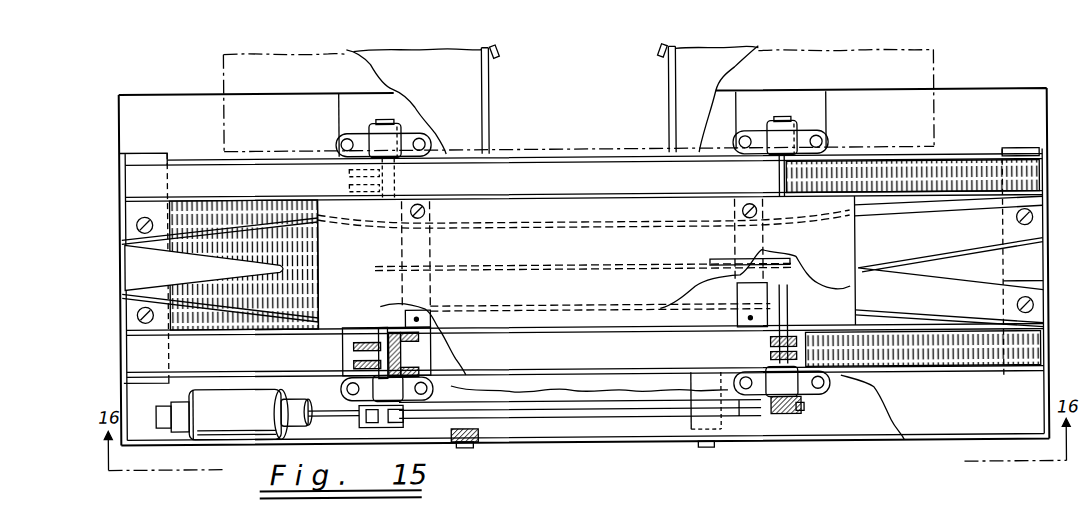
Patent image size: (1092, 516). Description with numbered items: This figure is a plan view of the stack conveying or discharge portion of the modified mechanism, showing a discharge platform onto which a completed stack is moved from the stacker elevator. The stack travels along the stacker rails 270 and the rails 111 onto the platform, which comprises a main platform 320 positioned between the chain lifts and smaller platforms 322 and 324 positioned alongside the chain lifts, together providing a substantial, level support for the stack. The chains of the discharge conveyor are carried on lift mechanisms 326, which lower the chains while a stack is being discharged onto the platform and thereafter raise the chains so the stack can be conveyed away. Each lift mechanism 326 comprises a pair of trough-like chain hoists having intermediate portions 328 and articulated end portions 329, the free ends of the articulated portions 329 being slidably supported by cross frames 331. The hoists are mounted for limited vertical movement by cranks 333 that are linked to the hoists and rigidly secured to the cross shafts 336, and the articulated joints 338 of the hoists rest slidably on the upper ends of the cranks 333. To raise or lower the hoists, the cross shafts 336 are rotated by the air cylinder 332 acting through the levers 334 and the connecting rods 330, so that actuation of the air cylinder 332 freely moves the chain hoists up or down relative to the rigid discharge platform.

The rails 270 is at (660, 50).
The rails 111 is at (490, 110).
The smaller platform 322 is at (225, 84).
The main platform 320 is at (507, 212).
The articulated joints 338 is at (778, 173).
The articulated end portions 329 is at (247, 178).
The cross frames 331 is at (128, 268).
The cranks 333 is at (350, 186).
The intermediate portions 328 is at (640, 186).
The lift mechanisms 326 is at (604, 326).
The smaller platform 324 is at (647, 380).
The cross shafts 336 is at (397, 119).
The air cylinder 332 is at (251, 409).
The levers 334 is at (412, 420).
The connecting rods 330 is at (590, 425).